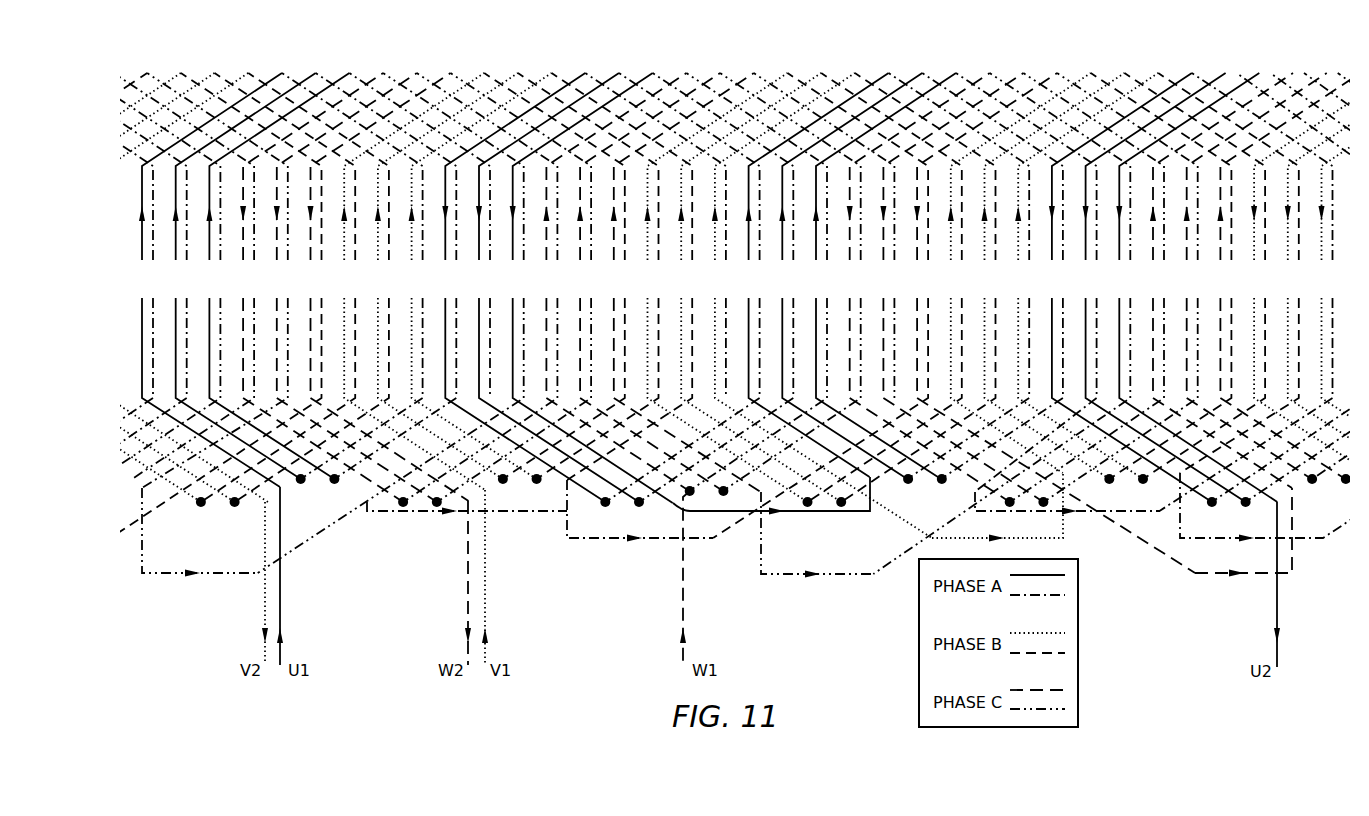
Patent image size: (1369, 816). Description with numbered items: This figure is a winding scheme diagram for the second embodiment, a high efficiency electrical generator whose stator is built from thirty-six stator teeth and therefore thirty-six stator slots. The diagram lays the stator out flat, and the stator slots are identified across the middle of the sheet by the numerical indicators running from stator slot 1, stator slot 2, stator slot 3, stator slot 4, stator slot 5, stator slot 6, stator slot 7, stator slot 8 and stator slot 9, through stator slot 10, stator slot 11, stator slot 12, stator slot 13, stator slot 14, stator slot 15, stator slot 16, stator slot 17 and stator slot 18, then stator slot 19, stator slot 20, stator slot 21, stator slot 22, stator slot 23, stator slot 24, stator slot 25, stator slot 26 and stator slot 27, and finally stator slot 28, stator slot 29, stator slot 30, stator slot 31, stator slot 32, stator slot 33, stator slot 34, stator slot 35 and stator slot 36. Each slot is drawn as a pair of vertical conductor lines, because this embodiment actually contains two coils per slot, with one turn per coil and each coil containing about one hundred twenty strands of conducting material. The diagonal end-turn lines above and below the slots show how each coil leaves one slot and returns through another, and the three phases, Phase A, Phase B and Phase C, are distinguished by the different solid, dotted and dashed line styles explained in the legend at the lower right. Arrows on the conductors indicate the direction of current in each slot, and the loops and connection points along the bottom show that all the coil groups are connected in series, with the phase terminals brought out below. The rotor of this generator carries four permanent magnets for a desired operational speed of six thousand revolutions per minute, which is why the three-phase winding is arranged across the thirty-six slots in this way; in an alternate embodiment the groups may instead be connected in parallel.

The stator slot 1 is at (141, 287).
The stator slot 2 is at (174, 287).
The stator slot 3 is at (215, 276).
The stator slot 4 is at (259, 287).
The stator slot 5 is at (289, 287).
The stator slot 6 is at (290, 305).
The stator slot 7 is at (343, 287).
The stator slot 8 is at (376, 287).
The stator slot 9 is at (417, 276).
The stator slot 10 is at (461, 287).
The stator slot 11 is at (494, 287).
The stator slot 12 is at (465, 323).
The stator slot 13 is at (546, 287).
The stator slot 14 is at (580, 287).
The stator slot 15 is at (622, 282).
The stator slot 16 is at (663, 287).
The stator slot 17 is at (697, 287).
The stator slot 18 is at (758, 305).
The stator slot 19 is at (747, 287).
The stator slot 20 is at (780, 287).
The stator slot 21 is at (821, 282).
The stator slot 22 is at (865, 287).
The stator slot 23 is at (899, 287).
The stator slot 24 is at (954, 323).
The stator slot 25 is at (949, 287).
The stator slot 26 is at (983, 287).
The stator slot 27 is at (1024, 276).
The stator slot 28 is at (1067, 287).
The stator slot 29 is at (1101, 287).
The stator slot 30 is at (1075, 323).
The stator slot 31 is at (1151, 287).
The stator slot 32 is at (1185, 287).
The stator slot 33 is at (1226, 276).
The stator slot 34 is at (1247, 287).
The stator slot 35 is at (1263, 287).
The stator slot 36 is at (1265, 292).